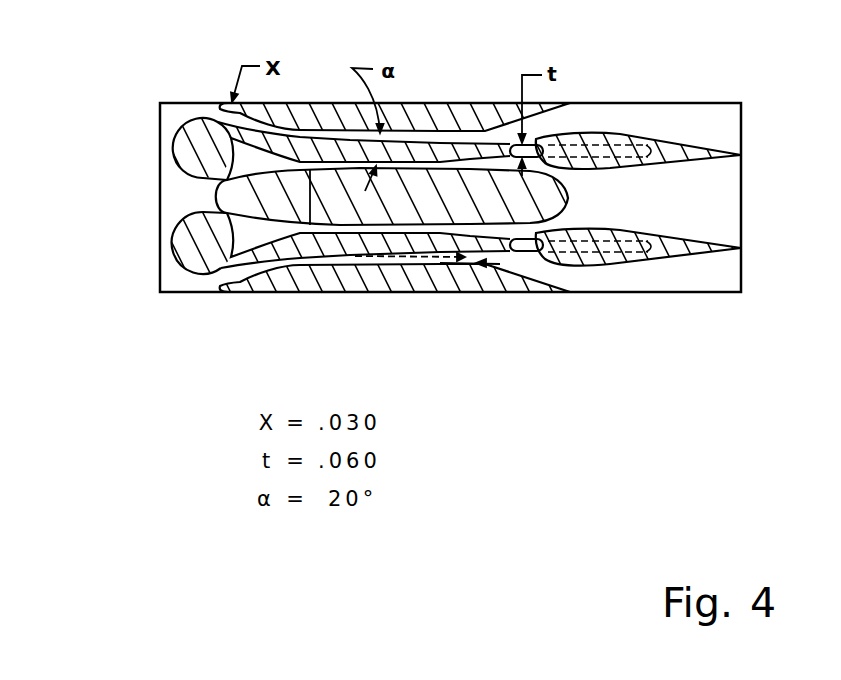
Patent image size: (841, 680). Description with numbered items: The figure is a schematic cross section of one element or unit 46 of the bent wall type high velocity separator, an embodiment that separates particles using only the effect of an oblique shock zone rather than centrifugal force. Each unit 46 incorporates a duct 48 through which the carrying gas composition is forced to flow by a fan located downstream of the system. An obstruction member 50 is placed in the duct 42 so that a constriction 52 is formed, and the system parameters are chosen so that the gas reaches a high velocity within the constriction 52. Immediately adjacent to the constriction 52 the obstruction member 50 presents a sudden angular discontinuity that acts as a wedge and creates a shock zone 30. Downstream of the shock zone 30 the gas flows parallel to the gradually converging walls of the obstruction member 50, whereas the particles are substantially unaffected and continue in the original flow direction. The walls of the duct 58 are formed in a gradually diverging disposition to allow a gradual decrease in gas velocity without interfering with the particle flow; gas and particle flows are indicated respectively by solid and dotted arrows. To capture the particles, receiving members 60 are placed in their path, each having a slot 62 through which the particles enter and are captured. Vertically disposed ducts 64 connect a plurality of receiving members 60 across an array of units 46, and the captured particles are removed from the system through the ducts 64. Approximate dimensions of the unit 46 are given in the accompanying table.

The shock zone 30 is at (297, 134).
The duct 42 is at (227, 180).
The element or unit 46 is at (160, 114).
The duct 48 is at (215, 198).
The obstruction member 50 is at (360, 213).
The constriction 52 is at (226, 134).
The walls of the duct 58 is at (345, 132).
The receiving member 60 is at (537, 150).
The slot 62 is at (621, 149).
The vertically disposed ducts 64 is at (610, 278).